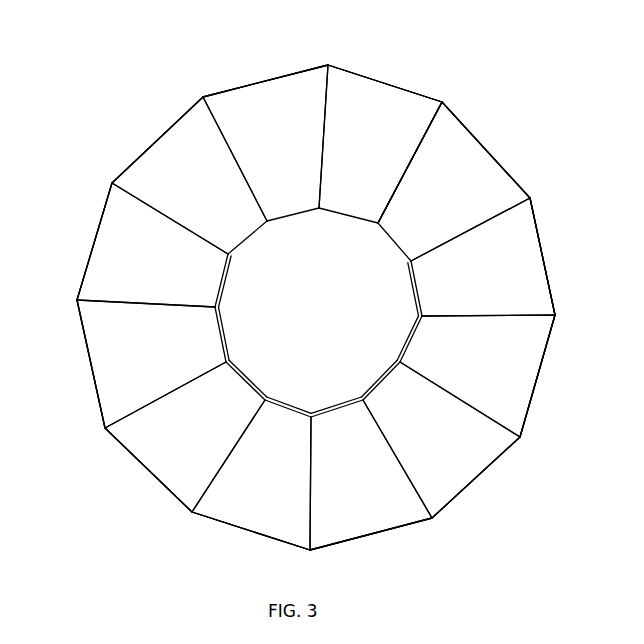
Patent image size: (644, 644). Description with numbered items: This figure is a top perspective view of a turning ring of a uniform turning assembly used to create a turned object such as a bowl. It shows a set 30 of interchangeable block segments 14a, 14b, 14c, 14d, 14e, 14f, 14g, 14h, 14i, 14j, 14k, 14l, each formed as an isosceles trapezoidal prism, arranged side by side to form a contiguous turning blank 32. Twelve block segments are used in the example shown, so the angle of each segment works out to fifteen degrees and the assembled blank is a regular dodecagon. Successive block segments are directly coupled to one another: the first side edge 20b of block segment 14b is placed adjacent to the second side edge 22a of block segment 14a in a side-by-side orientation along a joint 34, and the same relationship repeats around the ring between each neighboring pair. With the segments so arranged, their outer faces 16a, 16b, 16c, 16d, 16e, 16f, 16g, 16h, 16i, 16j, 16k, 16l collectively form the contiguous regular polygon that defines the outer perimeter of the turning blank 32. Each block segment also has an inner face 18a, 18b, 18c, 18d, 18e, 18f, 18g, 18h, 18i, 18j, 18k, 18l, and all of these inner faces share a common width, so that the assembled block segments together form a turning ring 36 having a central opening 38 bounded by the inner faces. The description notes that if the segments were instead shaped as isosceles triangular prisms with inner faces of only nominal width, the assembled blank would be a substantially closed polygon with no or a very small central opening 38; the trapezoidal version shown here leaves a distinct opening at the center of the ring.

The set of interchangeable block segments 30 is at (82, 92).
The contiguous turning blank 32 is at (536, 217).
The joint 34 is at (445, 97).
The turning ring 36 is at (551, 335).
The central opening 38 is at (330, 328).
The first side edge 20b is at (418, 151).
The second side edge 22a is at (424, 108).
The block segment 14a is at (398, 87).
The block segment 14b is at (505, 174).
The block segment 14c is at (543, 292).
The block segment 14d is at (529, 403).
The block segment 14e is at (466, 487).
The block segment 14f is at (403, 526).
The block segment 14g is at (217, 520).
The block segment 14h is at (164, 484).
The block segment 14i is at (98, 392).
The block segment 14j is at (86, 276).
The block segment 14k is at (132, 164).
The block segment 14l is at (240, 88).
The outer face 16a is at (353, 73).
The outer face 16b is at (455, 116).
The outer face 16c is at (542, 255).
The outer face 16d is at (543, 365).
The outer face 16e is at (498, 457).
The outer face 16f is at (354, 539).
The outer face 16g is at (265, 535).
The outer face 16h is at (126, 452).
The outer face 16i is at (87, 348).
The outer face 16j is at (100, 222).
The outer face 16k is at (166, 132).
The outer face 16l is at (284, 76).
The inner face 18a is at (347, 216).
The inner face 18b is at (399, 249).
The inner face 18c is at (416, 293).
The inner face 18d is at (414, 329).
The inner face 18e is at (384, 378).
The inner face 18f is at (343, 403).
The inner face 18g is at (288, 403).
The inner face 18h is at (245, 368).
The inner face 18i is at (227, 330).
The inner face 18j is at (225, 285).
The inner face 18k is at (244, 243).
The inner face 18l is at (302, 216).